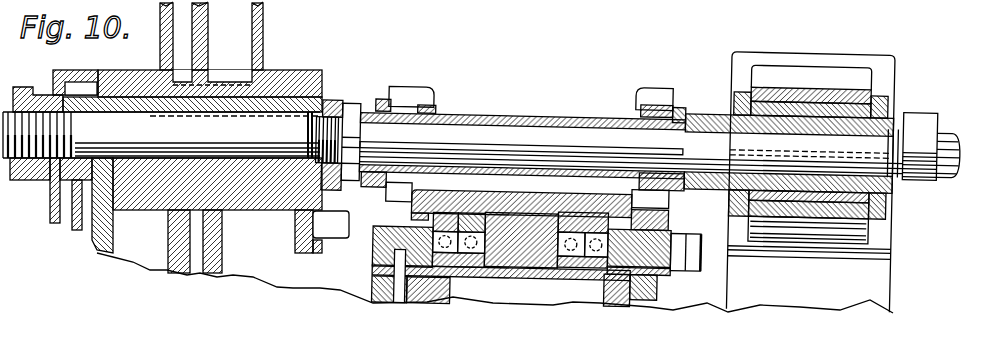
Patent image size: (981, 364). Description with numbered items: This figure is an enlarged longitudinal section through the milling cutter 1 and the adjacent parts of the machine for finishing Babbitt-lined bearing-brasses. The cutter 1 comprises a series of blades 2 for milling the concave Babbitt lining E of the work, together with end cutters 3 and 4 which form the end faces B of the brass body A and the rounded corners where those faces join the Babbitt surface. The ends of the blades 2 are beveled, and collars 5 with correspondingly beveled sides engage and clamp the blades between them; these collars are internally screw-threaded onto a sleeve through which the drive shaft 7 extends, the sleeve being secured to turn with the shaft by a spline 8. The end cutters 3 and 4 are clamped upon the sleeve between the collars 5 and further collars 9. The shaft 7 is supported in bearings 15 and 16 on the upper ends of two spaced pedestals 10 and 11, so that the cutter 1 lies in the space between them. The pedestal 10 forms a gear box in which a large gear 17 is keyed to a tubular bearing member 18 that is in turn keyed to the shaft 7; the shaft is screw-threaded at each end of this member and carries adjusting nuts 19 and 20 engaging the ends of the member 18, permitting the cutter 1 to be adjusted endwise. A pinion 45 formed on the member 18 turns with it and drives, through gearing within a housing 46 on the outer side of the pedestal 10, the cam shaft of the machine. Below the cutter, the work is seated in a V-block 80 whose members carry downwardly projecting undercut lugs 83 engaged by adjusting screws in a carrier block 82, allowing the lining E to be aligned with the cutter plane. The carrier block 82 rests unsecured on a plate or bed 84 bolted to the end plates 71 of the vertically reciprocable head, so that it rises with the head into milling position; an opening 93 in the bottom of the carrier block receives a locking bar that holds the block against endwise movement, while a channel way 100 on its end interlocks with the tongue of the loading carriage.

The milling cutter 1 is at (496, 109).
The blades 2 is at (471, 107).
The end cutter 3 is at (412, 88).
The end cutter 4 is at (632, 94).
The collars 5 is at (427, 102).
The drive shaft 7 is at (567, 92).
The spline 8 is at (518, 139).
The collars 9 is at (677, 102).
The pedestal 10 is at (97, 255).
The pedestal 11 is at (876, 266).
The bearing 15 is at (282, 82).
The bearing 16 is at (804, 85).
The large gear 17 is at (222, 258).
The tubular bearing member 18 is at (125, 105).
The adjusting nut 19 is at (333, 97).
The adjusting nut 20 is at (20, 87).
The pinion 45 is at (83, 85).
The housing 46 is at (50, 215).
The end plates 71 is at (383, 285).
The V-block 80 is at (582, 230).
The carrier block 82 is at (675, 228).
The lug 83 is at (576, 253).
The plate or bed 84 is at (345, 267).
The opening 93 is at (398, 252).
The channel way 100 is at (682, 245).
The body A is at (539, 247).
The end faces B is at (388, 206).
The Babbitt lining E is at (508, 281).